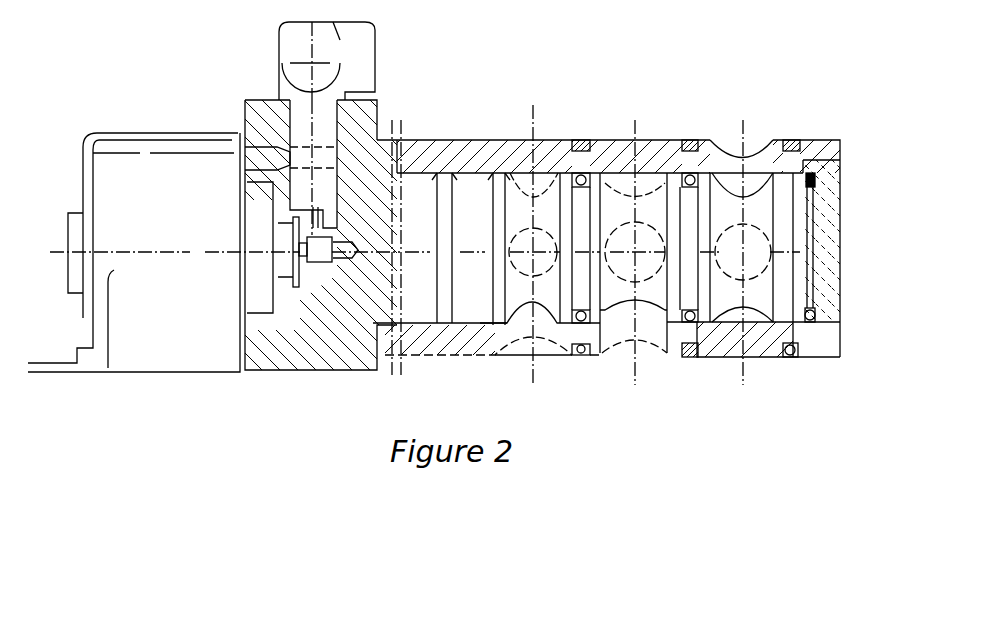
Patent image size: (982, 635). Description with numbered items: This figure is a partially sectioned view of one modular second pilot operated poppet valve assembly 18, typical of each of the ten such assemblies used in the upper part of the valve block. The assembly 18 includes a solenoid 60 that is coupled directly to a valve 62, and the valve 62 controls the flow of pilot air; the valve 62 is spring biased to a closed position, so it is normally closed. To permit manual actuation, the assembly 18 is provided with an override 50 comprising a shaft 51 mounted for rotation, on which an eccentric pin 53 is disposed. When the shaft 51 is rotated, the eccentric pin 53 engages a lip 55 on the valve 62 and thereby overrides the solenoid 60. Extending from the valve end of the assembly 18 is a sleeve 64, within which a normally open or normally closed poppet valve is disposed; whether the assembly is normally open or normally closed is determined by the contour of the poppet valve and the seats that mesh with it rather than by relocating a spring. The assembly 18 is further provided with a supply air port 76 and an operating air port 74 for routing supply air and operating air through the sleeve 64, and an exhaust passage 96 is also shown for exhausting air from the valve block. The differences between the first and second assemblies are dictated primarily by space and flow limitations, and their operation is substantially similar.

The second pilot operated poppet valve assembly 18 is at (240, 420).
The override 50 is at (360, 57).
The shaft 51 is at (337, 118).
The eccentric pin 53 is at (333, 225).
The lip 55 is at (313, 275).
The solenoid 60 is at (147, 133).
The valve 62 is at (340, 262).
The sleeve 64 is at (556, 184).
The operating air port 74 is at (622, 348).
The supply air port 76 is at (728, 184).
The exhaust passage 96 is at (518, 347).